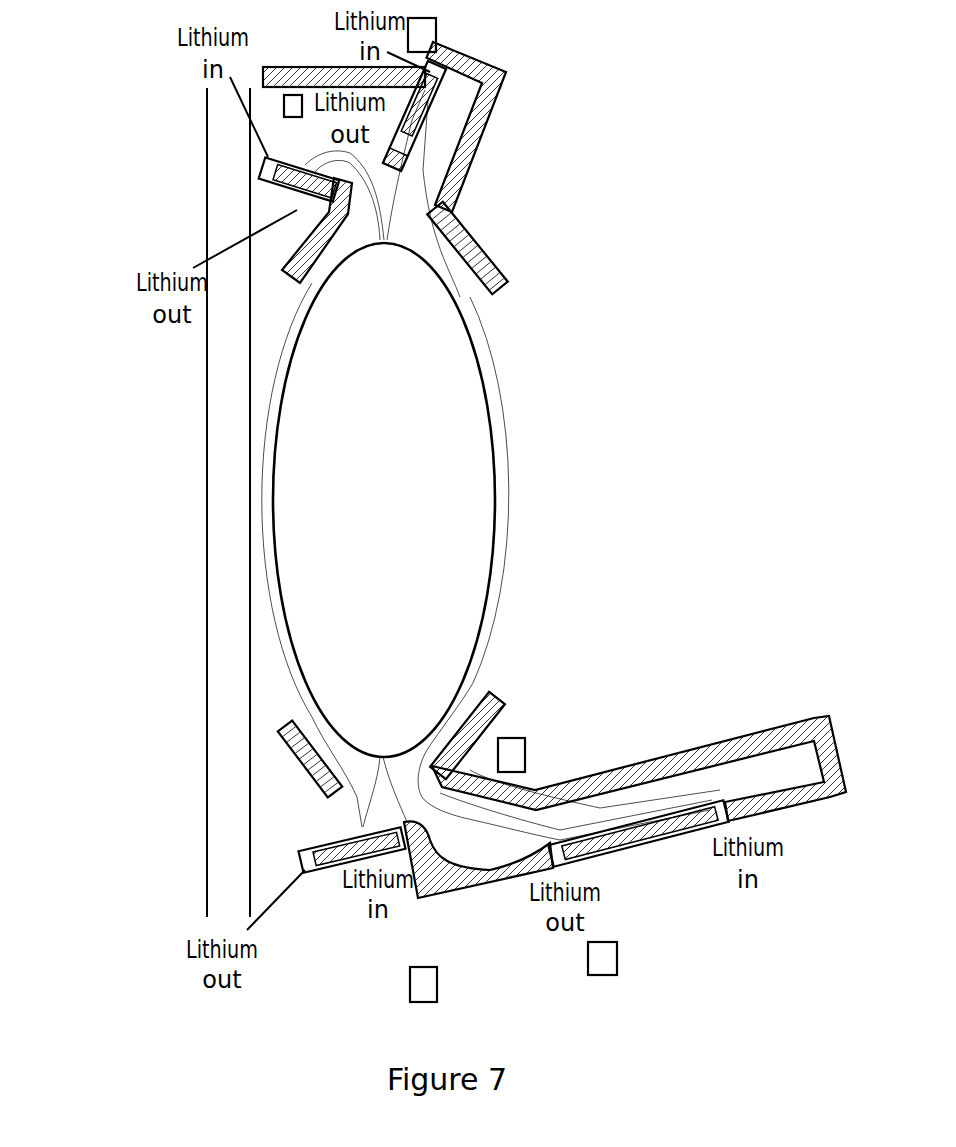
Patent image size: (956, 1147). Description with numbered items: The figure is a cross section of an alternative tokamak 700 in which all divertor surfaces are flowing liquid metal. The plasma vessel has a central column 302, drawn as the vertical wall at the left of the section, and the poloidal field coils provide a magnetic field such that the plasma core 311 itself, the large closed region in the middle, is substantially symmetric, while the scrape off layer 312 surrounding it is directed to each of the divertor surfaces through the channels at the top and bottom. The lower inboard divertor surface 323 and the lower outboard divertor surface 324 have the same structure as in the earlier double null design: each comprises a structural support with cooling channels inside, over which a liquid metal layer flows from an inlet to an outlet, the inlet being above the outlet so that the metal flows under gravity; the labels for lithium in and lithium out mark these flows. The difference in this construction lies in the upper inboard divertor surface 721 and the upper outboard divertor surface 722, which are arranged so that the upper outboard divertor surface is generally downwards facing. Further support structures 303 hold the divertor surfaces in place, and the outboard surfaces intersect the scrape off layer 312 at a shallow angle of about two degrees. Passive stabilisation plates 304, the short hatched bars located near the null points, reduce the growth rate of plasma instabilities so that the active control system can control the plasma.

The tokamak 700 is at (122, 349).
The central column 302 is at (208, 168).
The support structures 303 is at (480, 55).
The passive stabilisation plates 304 is at (300, 212).
The plasma core 311 is at (478, 372).
The scrape off layer 312 is at (510, 463).
The upper inboard divertor surface 721 is at (263, 157).
The upper outboard divertor surface 722 is at (440, 100).
The lower inboard divertor surface 323 is at (333, 847).
The lower outboard divertor surface 324 is at (645, 822).